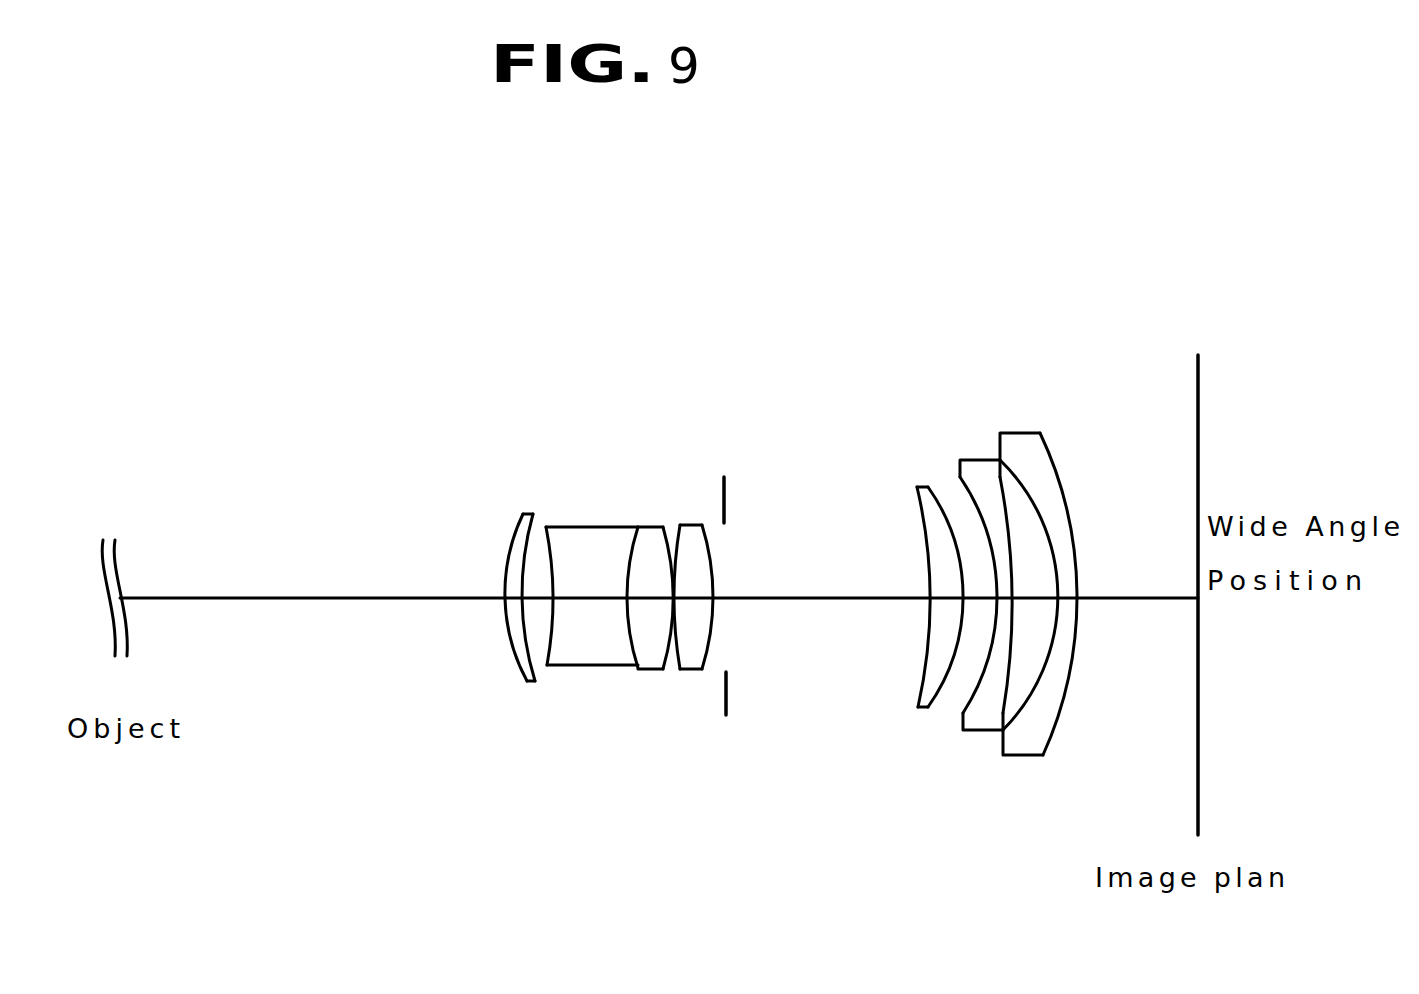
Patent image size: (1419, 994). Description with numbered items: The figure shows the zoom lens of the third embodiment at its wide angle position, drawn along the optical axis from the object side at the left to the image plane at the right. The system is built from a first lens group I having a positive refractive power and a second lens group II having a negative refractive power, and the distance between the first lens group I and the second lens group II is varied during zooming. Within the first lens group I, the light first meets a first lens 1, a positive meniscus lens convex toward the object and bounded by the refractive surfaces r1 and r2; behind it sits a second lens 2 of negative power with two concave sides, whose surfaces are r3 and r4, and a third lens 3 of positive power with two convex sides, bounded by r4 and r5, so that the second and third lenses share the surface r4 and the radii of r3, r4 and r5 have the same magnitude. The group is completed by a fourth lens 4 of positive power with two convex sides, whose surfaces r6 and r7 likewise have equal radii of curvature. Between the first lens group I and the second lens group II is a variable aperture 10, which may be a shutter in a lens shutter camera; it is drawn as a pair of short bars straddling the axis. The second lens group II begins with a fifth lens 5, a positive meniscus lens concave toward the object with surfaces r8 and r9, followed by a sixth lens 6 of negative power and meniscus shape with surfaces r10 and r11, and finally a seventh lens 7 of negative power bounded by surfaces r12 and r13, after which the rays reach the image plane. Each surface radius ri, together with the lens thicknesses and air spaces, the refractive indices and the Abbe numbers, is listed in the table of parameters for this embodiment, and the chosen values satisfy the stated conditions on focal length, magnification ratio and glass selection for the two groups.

The first lens group I is at (488, 280).
The second lens group II is at (910, 275).
The first lens 1 is at (517, 324).
The second lens 2 is at (582, 324).
The third lens 3 is at (587, 324).
The fourth lens 4 is at (713, 327).
The fifth lens 5 is at (930, 322).
The sixth lens 6 is at (1013, 322).
The seventh lens 7 is at (1090, 322).
The variable aperture 10 is at (723, 708).
The refractive surface r1 is at (512, 552).
The refractive surface r2 is at (526, 512).
The refractive surface r3 is at (547, 527).
The refractive surface r4 is at (633, 542).
The refractive surface r5 is at (658, 522).
The refractive surface r6 is at (679, 523).
The refractive surface r7 is at (702, 523).
The refractive surface r8 is at (916, 490).
The refractive surface r9 is at (937, 500).
The refractive surface r10 is at (960, 462).
The refractive surface r11 is at (998, 433).
The refractive surface r12 is at (1032, 478).
The refractive surface r13 is at (1066, 494).